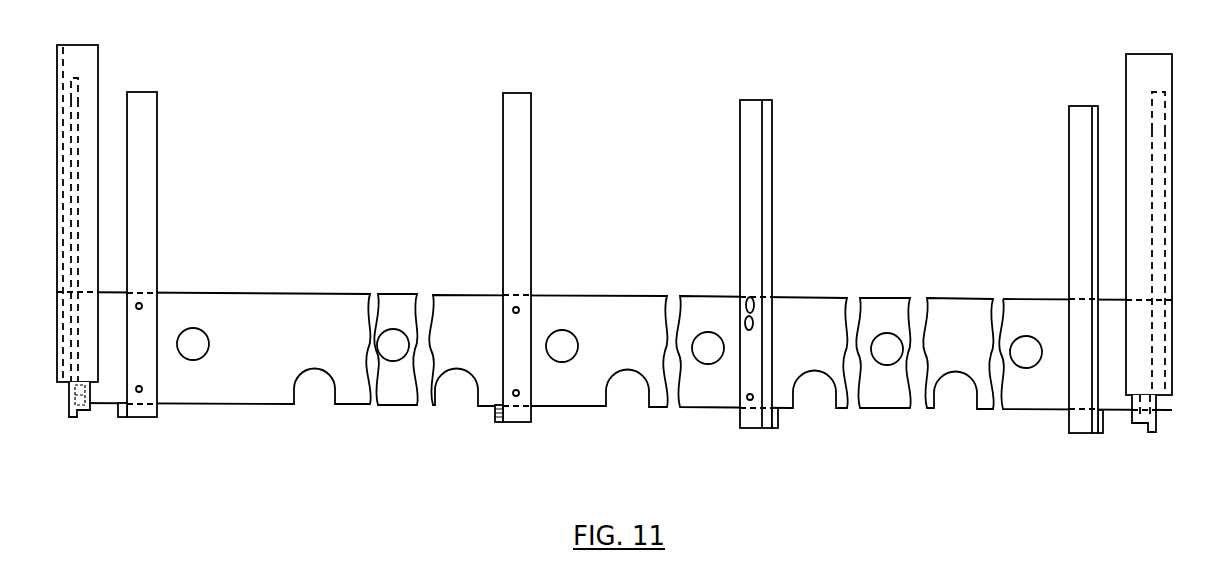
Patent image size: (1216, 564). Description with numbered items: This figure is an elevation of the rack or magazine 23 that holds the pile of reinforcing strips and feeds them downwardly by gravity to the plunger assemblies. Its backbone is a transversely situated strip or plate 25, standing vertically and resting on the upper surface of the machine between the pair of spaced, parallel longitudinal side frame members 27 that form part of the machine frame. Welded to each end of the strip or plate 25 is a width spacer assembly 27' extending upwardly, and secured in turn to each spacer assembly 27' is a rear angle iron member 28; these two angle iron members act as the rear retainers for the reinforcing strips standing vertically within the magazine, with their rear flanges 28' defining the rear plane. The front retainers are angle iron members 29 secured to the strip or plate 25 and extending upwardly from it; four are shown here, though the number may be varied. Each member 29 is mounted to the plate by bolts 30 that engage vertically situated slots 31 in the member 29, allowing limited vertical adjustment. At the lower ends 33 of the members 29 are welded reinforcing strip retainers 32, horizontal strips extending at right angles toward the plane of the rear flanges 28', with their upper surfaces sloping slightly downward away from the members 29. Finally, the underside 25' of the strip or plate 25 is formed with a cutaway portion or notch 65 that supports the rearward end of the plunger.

The rack or magazine 23 is at (614, 337).
The strip or plate 25 is at (214, 380).
The underside of the strip or plate 25' is at (390, 382).
The longitudinal side frame members 27 is at (611, 220).
The width spacer assembly 27' is at (618, 236).
The rear angle iron member 28 is at (636, 201).
The rear flanges 28' is at (614, 212).
The angle iron members 29 is at (517, 238).
The bolts 30 is at (142, 303).
The slots 31 is at (755, 305).
The reinforcing strip retainers 32 is at (495, 420).
The lower ends 33 is at (520, 400).
The cutaway portion or notch 65 is at (83, 407).